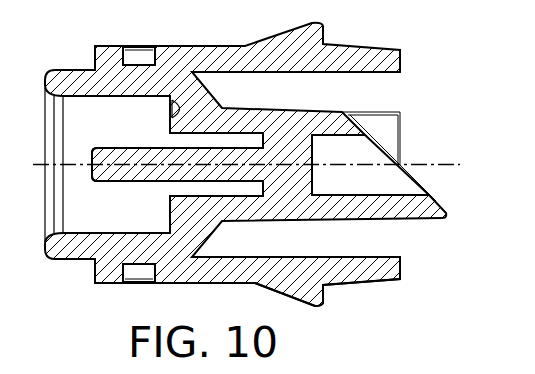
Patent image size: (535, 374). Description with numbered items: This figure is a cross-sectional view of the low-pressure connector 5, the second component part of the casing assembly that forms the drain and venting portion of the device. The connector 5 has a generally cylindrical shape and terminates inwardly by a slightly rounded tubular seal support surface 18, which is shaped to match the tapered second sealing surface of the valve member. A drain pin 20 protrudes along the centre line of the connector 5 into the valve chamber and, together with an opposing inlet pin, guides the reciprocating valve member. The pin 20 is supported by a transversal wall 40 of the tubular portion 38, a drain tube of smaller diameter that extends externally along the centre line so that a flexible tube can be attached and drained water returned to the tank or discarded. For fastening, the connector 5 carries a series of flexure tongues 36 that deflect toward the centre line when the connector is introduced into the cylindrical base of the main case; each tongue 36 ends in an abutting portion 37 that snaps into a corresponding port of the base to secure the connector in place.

The low-pressure connector 5 is at (417, 78).
The seal support surface 18 is at (179, 116).
The drain pin 20 is at (118, 180).
The flexure tongue 36 is at (401, 267).
The abutting portion 37 is at (319, 308).
The tubular portion 38 is at (428, 209).
The transversal wall 40 is at (302, 150).